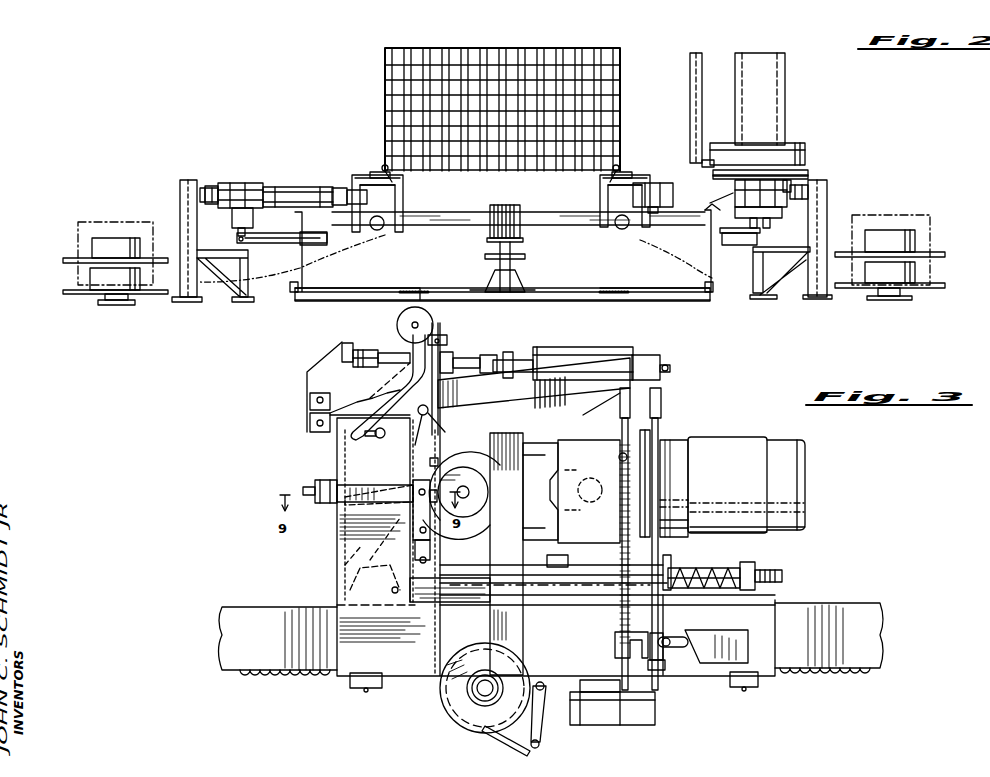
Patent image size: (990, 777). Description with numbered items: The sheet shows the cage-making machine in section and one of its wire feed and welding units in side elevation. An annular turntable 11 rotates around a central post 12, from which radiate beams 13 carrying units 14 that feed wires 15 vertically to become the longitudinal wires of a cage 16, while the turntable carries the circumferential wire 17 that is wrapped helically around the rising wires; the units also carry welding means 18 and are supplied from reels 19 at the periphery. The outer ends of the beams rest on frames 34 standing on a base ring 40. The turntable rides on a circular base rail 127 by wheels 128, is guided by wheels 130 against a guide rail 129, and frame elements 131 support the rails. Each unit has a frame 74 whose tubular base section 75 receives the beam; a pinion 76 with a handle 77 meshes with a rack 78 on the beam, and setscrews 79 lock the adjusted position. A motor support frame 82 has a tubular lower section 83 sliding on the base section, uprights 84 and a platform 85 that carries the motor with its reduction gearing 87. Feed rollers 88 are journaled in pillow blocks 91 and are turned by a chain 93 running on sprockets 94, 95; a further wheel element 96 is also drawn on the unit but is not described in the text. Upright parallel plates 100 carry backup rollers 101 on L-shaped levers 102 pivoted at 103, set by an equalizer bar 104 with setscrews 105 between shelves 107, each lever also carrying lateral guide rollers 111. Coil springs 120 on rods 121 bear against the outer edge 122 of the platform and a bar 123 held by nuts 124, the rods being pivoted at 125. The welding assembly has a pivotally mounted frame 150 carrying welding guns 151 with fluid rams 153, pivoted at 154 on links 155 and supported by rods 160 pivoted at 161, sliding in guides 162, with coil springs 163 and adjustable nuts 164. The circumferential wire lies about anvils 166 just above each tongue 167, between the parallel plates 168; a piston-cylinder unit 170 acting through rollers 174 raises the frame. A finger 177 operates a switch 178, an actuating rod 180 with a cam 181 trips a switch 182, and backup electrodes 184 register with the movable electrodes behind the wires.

In FIG. 2, the annular turntable 11 is at (270, 190).
In FIG. 2, the central post 12 is at (514, 258).
In FIG. 2, the beams 13 is at (440, 218).
In FIG. 3, the beams 13 is at (262, 607).
In FIG. 2, the wire feed units 14 is at (388, 228).
In FIG. 3, the wire feed units 14 is at (693, 398).
In FIG. 2, the wires 15 is at (621, 150).
In FIG. 3, the wires 15 is at (498, 750).
In FIG. 2, the cage 16 is at (624, 88).
In FIG. 2, the circumferential wire 17 is at (621, 125).
In FIG. 3, the welding means 18 is at (600, 343).
In FIG. 2, the reels 19 is at (925, 268).
In FIG. 2, the frames 34 is at (292, 290).
In FIG. 2, the base ring 40 is at (645, 296).
In FIG. 3, the frame 74 is at (335, 602).
In FIG. 3, the tubular base section 75 is at (780, 603).
In FIG. 3, the pinion 76 is at (578, 713).
In FIG. 3, the handle 77 is at (544, 733).
In FIG. 3, the rack 78 is at (298, 674).
In FIG. 3, the setscrews 79 is at (366, 692).
In FIG. 3, the motor support frame 82 is at (527, 643).
In FIG. 3, the tubular lower section 83 is at (527, 623).
In FIG. 3, the uprights 84 is at (512, 556).
In FIG. 3, the platform 85 is at (578, 567).
In FIG. 3, the reduction gearing 87 is at (589, 491).
In FIG. 3, the feed rollers 88 is at (460, 468).
In FIG. 3, the pillow blocks 91 is at (483, 457).
In FIG. 3, the chain 93 is at (537, 477).
In FIG. 3, the sprocket 94 is at (470, 540).
In FIG. 3, the sprocket 95 is at (595, 517).
In FIG. 3, the hand wheel 96 is at (457, 724).
In FIG. 3, the upright parallel plates 100 is at (377, 459).
In FIG. 3, the backup rollers 101 is at (387, 500).
In FIG. 3, the L-shaped lever 102 is at (372, 486).
In FIG. 3, the pivot 103 is at (428, 562).
In FIG. 3, the equalizer bar 104 is at (323, 483).
In FIG. 3, the setscrews 105 is at (307, 485).
In FIG. 3, the shelves 107 is at (325, 506).
In FIG. 3, the lateral guide rollers 111 is at (413, 547).
In FIG. 3, the coil springs 120 is at (720, 568).
In FIG. 3, the rods 121 is at (782, 575).
In FIG. 3, the outer edge 122 is at (668, 562).
In FIG. 3, the bar 123 is at (748, 565).
In FIG. 3, the nuts 124 is at (765, 617).
In FIG. 3, the pivot 125 is at (395, 593).
In FIG. 2, the circular base rail 127 is at (757, 233).
In FIG. 2, the wheels 128 is at (763, 225).
In FIG. 2, the guide rail 129 is at (208, 188).
In FIG. 2, the wheels 130 is at (803, 185).
In FIG. 2, the frame elements 131 is at (828, 206).
In FIG. 3, the pivotally mounted frame 150 is at (534, 383).
In FIG. 3, the welding guns 151 is at (490, 352).
In FIG. 3, the fluid ram 153 is at (572, 353).
In FIG. 3, the pivot 154 is at (313, 397).
In FIG. 3, the links 155 is at (310, 415).
In FIG. 3, the rods 160 is at (623, 428).
In FIG. 3, the pivot 161 is at (620, 392).
In FIG. 3, the guides 162 is at (622, 633).
In FIG. 3, the coil springs 163 is at (622, 532).
In FIG. 3, the adjustable nuts 164 is at (618, 457).
In FIG. 3, the anvils 166 is at (433, 336).
In FIG. 3, the tongue 167 is at (440, 350).
In FIG. 3, the parallel plates 168 is at (327, 377).
In FIG. 3, the piston-cylinder unit 170 is at (350, 560).
In FIG. 3, the rollers 174 is at (428, 410).
In FIG. 2, the finger 177 is at (727, 197).
In FIG. 2, the switch 178 is at (708, 232).
In FIG. 3, the actuating rod 180 is at (650, 433).
In FIG. 3, the cam 181 is at (667, 680).
In FIG. 3, the switch 182 is at (685, 638).
In FIG. 3, the backup electrodes 184 is at (382, 350).